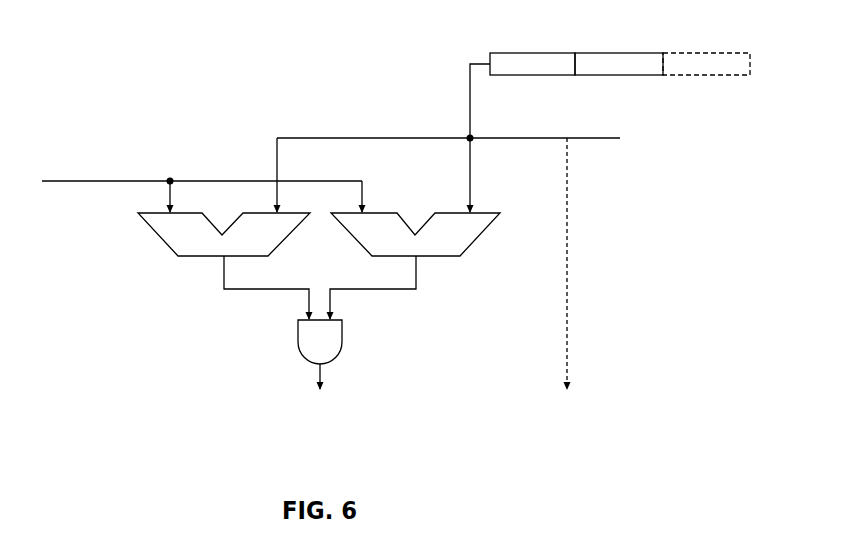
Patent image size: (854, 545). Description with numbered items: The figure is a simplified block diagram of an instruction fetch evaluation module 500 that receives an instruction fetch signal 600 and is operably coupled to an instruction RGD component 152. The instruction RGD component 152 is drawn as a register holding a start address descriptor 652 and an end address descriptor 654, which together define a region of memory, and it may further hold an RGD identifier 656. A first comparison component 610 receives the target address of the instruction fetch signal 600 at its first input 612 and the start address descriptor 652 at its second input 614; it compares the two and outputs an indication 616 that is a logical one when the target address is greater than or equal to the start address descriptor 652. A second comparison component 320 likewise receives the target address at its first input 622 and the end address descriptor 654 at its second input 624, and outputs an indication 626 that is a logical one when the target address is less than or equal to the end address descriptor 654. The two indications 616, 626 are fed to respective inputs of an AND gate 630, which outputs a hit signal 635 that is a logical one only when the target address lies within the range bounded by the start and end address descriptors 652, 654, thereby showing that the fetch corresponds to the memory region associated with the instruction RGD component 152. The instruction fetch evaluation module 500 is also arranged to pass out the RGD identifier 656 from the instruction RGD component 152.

The instruction fetch evaluation module 500 is at (211, 84).
The instruction fetch signal 600 is at (62, 160).
The first input of the first comparison component 612 is at (158, 210).
The second input of the first comparison component 614 is at (265, 210).
The first comparison component 610 is at (158, 236).
The indication output by the first comparison component 616 is at (218, 268).
The first input of the second comparison component 622 is at (352, 210).
The second input of the second comparison component 624 is at (458, 210).
The second comparator 320 is at (350, 236).
The indication output by the second comparison component 626 is at (410, 268).
The AND gate 630 is at (294, 342).
The hit signal 635 is at (316, 375).
The instruction RGD component 152 is at (750, 63).
The start address descriptor 652 is at (548, 77).
The end address descriptor 654 is at (632, 77).
The RGD identifier 656 is at (720, 77).